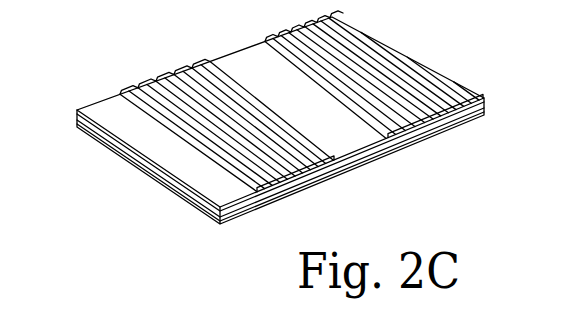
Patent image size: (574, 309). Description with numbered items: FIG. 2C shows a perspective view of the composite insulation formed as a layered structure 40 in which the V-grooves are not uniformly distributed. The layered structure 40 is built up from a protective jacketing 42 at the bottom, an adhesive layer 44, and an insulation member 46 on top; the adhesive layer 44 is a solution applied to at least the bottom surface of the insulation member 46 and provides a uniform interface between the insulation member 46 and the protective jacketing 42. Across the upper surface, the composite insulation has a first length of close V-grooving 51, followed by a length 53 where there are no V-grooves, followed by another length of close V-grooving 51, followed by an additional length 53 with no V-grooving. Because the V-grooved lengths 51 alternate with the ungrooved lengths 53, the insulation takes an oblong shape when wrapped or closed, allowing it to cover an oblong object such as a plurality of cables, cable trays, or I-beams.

The layered structure 40 is at (65, 90).
The protective jacketing 42 is at (203, 217).
The adhesive layer 44 is at (144, 168).
The insulation member 46 is at (118, 150).
The close V-grooving 51 is at (467, 122).
The length where there are no V-grooves 53 is at (366, 133).